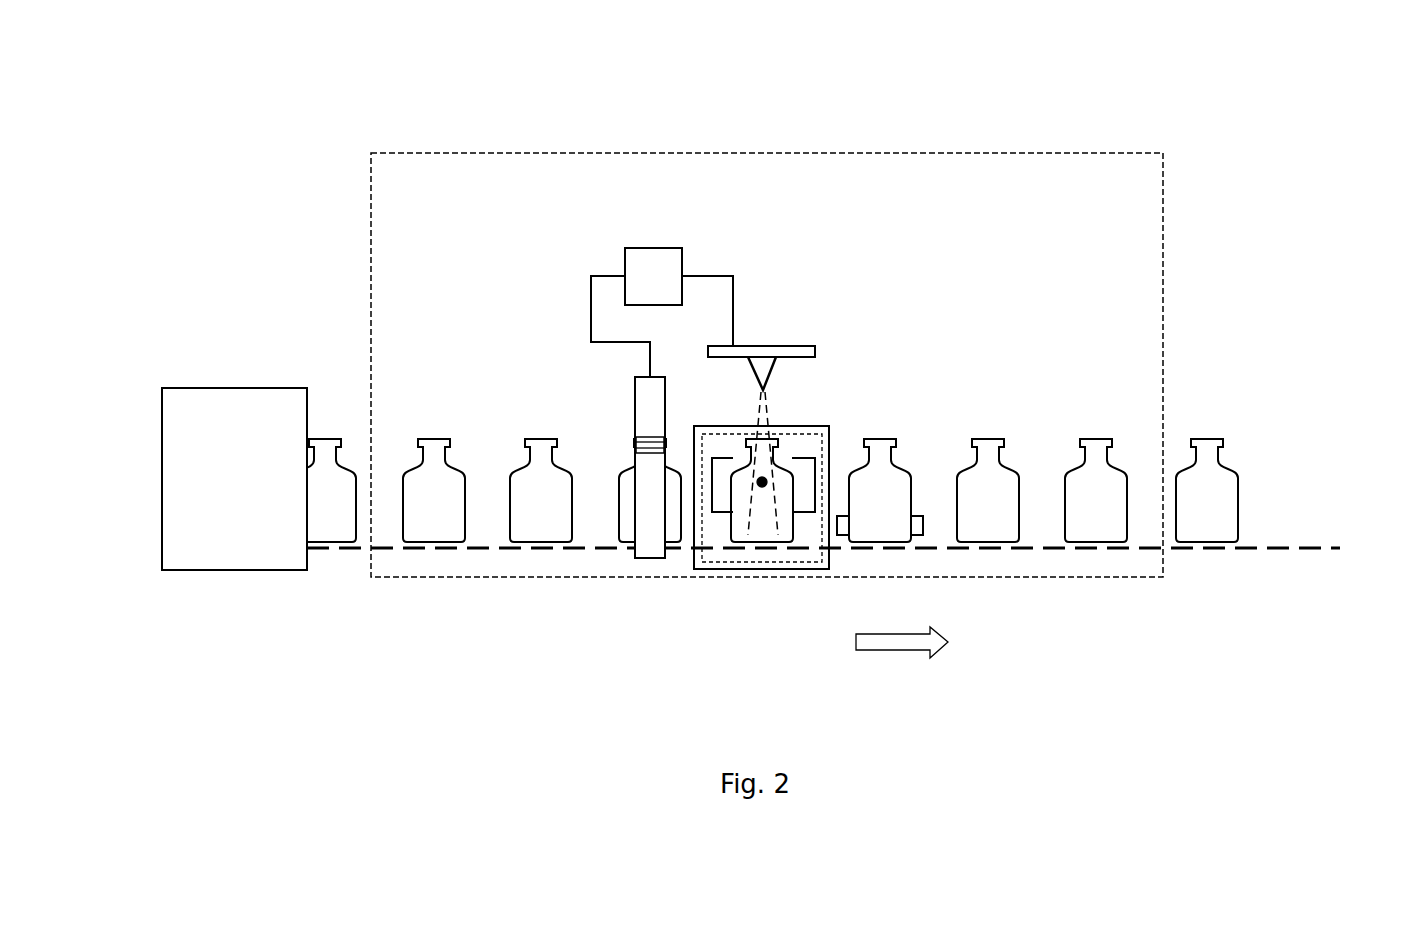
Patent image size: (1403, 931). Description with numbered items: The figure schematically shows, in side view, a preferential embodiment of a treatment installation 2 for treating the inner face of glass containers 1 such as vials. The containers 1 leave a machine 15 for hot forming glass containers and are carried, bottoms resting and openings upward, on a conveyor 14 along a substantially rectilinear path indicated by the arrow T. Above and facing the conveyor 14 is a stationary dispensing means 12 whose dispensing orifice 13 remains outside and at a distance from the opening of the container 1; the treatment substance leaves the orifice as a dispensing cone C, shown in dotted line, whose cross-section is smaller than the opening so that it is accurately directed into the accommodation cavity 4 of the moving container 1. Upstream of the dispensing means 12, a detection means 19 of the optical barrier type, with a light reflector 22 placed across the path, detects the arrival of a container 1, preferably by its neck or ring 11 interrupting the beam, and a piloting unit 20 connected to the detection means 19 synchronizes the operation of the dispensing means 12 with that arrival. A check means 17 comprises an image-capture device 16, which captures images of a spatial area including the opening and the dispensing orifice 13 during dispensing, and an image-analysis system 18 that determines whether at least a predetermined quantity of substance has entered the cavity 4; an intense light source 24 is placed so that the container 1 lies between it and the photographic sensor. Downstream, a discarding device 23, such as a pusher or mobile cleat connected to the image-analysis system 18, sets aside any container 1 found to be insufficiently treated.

The glass container 1 is at (408, 462).
The treatment installation 2 is at (431, 150).
The accommodation cavity 4 is at (768, 480).
The ring 11 is at (660, 436).
The dispensing means 12 is at (761, 346).
The dispensing orifice 13 is at (765, 390).
The conveyor 14 is at (430, 548).
The machine for hot forming a glass container 15 is at (234, 479).
The image-capture device 16 is at (720, 513).
The check means 17 is at (718, 427).
The image-analysis system 18 is at (692, 558).
The detection means 19 is at (639, 560).
The piloting unit 20 is at (662, 312).
The light reflector 22 is at (655, 452).
The discarding device 23 is at (921, 538).
The light source 24 is at (800, 565).
The dispensing cone C is at (750, 502).
The arrow indicating rectilinear path T is at (902, 628).